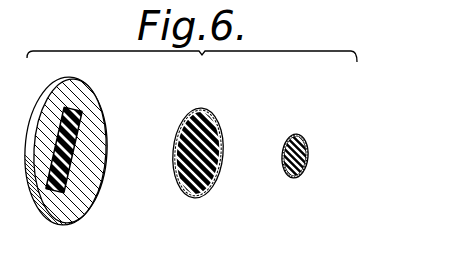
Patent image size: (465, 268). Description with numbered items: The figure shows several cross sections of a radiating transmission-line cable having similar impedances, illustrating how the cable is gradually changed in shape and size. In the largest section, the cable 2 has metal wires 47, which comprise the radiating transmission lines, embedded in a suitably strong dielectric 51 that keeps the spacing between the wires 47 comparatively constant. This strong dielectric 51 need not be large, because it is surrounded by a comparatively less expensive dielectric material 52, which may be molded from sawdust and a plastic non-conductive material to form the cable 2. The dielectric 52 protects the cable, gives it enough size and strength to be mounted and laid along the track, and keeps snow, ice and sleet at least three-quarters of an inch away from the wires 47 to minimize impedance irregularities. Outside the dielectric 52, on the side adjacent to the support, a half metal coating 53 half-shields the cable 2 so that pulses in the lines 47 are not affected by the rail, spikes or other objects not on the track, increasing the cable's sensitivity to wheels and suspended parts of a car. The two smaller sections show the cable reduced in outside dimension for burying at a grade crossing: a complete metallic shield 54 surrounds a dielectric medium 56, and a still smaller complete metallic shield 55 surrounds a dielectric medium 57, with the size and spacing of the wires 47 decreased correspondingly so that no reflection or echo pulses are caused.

The cable 2 is at (103, 81).
The metal wires 47 is at (105, 126).
The strong dielectric 51 is at (92, 183).
The dielectric material 52 is at (100, 150).
The half metal coating 53 is at (44, 93).
The complete metallic shield 54 is at (210, 112).
The complete metallic shield 55 is at (303, 140).
The dielectric medium 56 is at (222, 142).
The dielectric medium 57 is at (307, 150).